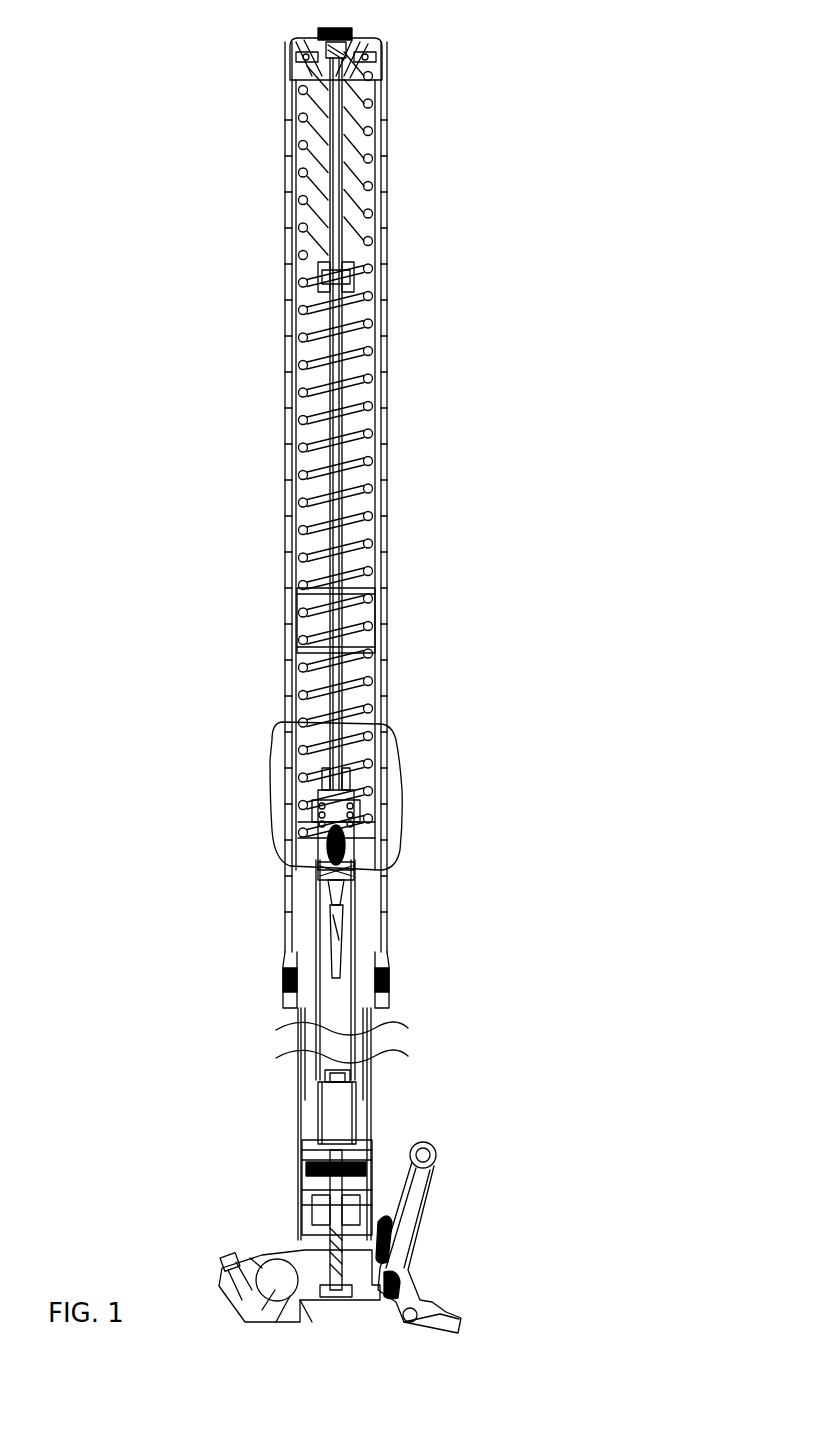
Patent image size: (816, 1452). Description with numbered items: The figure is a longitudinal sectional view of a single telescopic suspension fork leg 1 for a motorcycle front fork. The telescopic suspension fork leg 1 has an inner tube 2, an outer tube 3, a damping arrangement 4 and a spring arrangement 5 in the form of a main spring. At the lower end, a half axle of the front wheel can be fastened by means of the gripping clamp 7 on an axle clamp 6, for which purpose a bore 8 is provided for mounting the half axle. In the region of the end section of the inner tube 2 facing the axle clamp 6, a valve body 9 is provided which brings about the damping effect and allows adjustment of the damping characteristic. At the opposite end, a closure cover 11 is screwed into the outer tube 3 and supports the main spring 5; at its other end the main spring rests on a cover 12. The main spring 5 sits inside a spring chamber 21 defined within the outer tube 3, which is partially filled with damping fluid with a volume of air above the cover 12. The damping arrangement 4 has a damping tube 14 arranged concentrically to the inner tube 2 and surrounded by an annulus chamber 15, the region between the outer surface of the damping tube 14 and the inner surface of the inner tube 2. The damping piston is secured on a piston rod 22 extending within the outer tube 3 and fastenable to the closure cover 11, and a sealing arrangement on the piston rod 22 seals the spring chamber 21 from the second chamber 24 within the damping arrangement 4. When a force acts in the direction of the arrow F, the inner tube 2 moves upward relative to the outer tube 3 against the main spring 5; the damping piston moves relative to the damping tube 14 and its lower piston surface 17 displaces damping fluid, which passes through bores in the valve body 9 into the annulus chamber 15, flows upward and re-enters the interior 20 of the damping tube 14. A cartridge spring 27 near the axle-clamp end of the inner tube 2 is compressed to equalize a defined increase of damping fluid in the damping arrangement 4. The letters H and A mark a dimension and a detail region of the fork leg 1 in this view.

The telescopic suspension fork leg 1 is at (208, 228).
The inner tube 2 is at (388, 1034).
The outer tube 3 is at (389, 376).
The damping arrangement 4 is at (278, 1092).
The spring arrangement 5 is at (372, 546).
The axle clamp 6 is at (398, 1292).
The gripping clamp 7 is at (250, 1252).
The bore 8 is at (277, 1280).
The valve body 9 is at (368, 1205).
The closure cover 11 is at (360, 30).
The cover 12 is at (366, 800).
The damping tube 14 is at (360, 1022).
The annulus chamber 15 is at (368, 1064).
The lower piston surface 17 is at (354, 892).
The interior 20 is at (333, 1054).
The spring chamber 21 is at (300, 380).
The piston rod 22 is at (355, 428).
The second chamber 24 is at (366, 928).
The cartridge spring 27 is at (372, 1236).
The stroke height H is at (300, 710).
The detail region A is at (274, 768).
The arrow F is at (185, 1098).